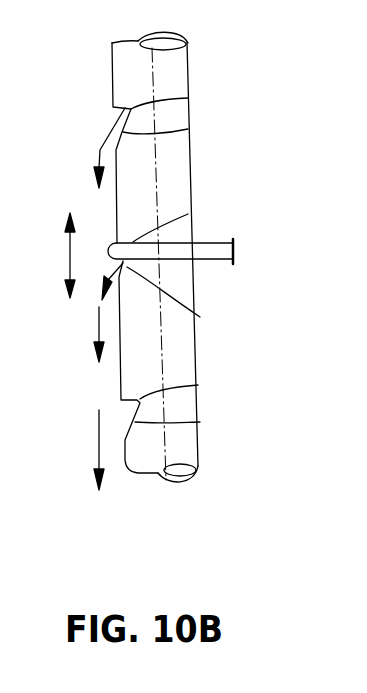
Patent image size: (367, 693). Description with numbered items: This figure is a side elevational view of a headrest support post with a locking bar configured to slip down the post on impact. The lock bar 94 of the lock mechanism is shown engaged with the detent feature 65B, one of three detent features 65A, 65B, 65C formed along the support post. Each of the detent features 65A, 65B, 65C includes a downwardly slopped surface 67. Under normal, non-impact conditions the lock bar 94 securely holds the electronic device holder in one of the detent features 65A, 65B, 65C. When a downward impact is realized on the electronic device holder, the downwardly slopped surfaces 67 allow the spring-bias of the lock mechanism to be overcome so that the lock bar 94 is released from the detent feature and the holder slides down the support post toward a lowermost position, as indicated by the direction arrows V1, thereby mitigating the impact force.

The detent feature 65A is at (188, 98).
The detent feature 65B is at (188, 214).
The detent feature 65C is at (198, 385).
The downwardly slopped surface 67 is at (188, 129).
The lock bar 94 is at (203, 257).
The velocity direction V1 is at (68, 252).